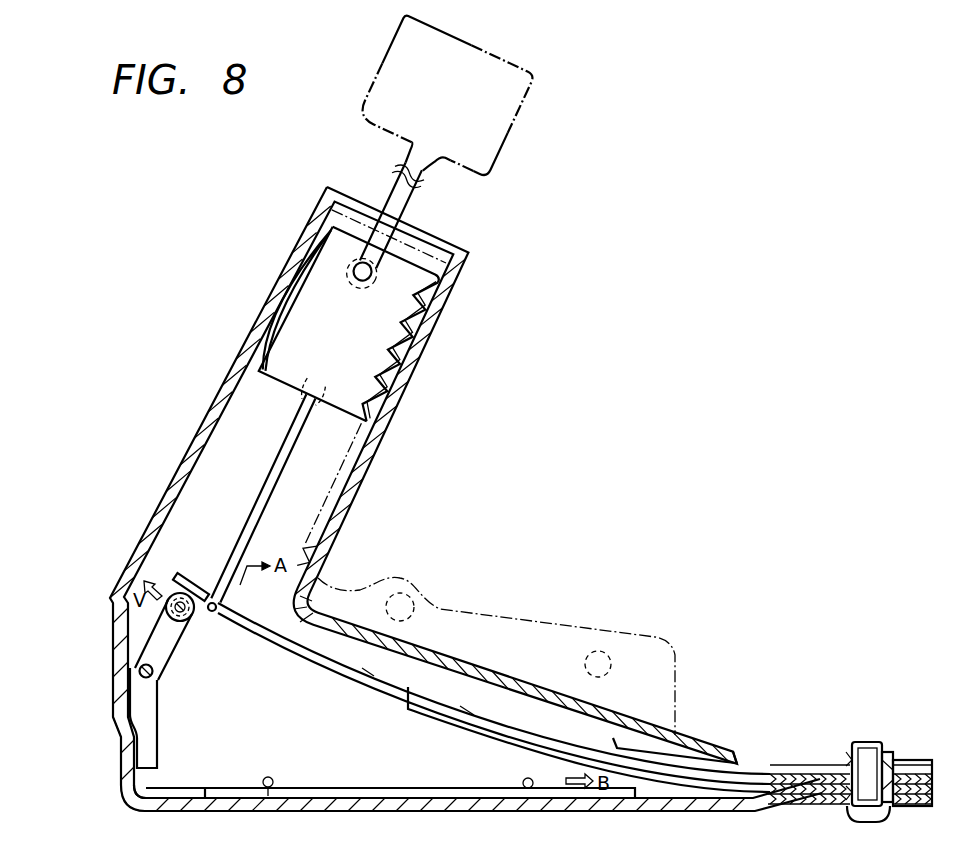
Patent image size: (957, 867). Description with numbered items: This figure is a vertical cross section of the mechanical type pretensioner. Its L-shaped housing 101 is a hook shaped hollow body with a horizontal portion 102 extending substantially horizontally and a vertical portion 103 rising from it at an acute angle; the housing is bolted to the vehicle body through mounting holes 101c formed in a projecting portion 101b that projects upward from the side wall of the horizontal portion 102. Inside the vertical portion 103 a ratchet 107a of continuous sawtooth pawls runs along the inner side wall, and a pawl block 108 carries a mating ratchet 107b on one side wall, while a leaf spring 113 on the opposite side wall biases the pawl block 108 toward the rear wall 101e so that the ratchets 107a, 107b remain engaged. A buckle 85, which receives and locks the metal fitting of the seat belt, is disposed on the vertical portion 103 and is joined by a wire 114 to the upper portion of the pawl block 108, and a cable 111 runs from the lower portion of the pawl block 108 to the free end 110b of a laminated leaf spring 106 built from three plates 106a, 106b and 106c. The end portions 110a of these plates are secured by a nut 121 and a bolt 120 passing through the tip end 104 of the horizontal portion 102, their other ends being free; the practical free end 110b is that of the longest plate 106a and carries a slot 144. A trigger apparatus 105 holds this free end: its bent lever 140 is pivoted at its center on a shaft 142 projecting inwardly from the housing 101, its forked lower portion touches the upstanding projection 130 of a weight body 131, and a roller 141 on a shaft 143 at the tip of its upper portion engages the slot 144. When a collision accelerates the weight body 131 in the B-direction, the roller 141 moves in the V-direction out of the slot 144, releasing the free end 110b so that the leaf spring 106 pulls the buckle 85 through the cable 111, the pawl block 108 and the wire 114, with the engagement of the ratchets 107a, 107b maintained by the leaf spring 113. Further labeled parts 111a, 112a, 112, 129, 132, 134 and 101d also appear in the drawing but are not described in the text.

The buckle 85 is at (513, 125).
The wire 114 is at (412, 207).
The leaf spring 113 is at (300, 255).
The ratchet 107b is at (420, 300).
The pawl block 108 is at (352, 359).
The ratchet 107a is at (413, 372).
The vertical portion 103 is at (390, 446).
The rear wall 101e is at (201, 433).
The cable 111 is at (277, 470).
The roller 141 is at (165, 570).
The pin 111a is at (212, 602).
The slot 144 is at (192, 580).
The L-shaped housing 101 is at (405, 559).
The free end 110b is at (318, 580).
The mounting holes 101c is at (400, 607).
The plate 106a is at (367, 674).
The projecting portion 101b is at (520, 618).
The plate 106b is at (468, 710).
The plate 106c is at (614, 740).
The shaft 143 is at (168, 608).
The arm of base plate 112a is at (178, 663).
The shaft 142 is at (139, 671).
The bent lever 140 is at (148, 707).
The trigger apparatus 105 is at (300, 722).
The step portion 129 is at (142, 729).
The leaf spring 106 is at (440, 718).
The base plate 112 is at (166, 774).
The weight body 131 is at (218, 788).
The plate 132 is at (407, 788).
The upstanding projection 130 is at (128, 775).
The horizontal portion 102 is at (750, 752).
The bolt 120 is at (856, 746).
The nut 121 is at (889, 750).
The tip end 104 is at (905, 760).
The pin 134 is at (268, 796).
The housing lower wall 101d is at (528, 812).
The end portions 110a is at (823, 800).